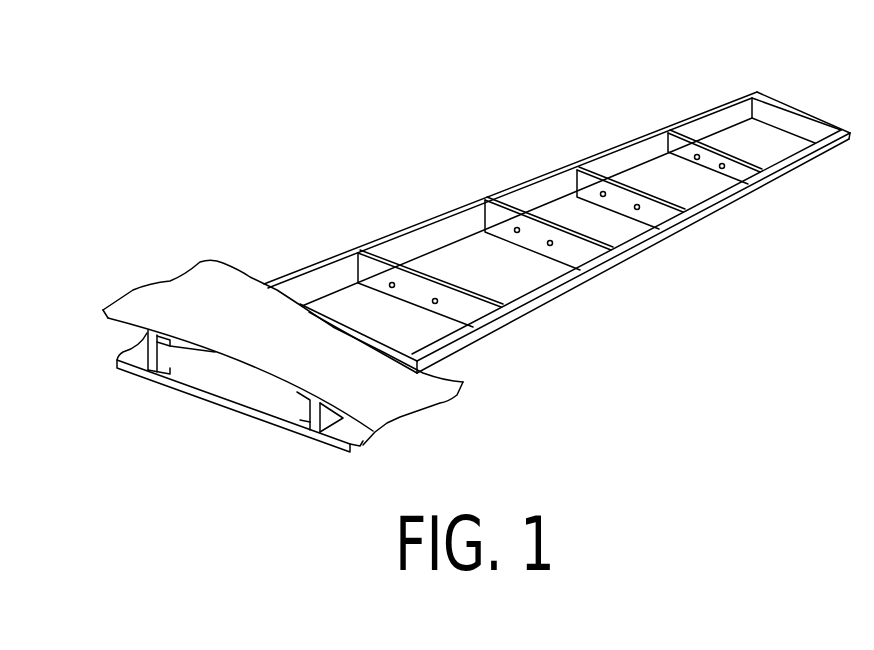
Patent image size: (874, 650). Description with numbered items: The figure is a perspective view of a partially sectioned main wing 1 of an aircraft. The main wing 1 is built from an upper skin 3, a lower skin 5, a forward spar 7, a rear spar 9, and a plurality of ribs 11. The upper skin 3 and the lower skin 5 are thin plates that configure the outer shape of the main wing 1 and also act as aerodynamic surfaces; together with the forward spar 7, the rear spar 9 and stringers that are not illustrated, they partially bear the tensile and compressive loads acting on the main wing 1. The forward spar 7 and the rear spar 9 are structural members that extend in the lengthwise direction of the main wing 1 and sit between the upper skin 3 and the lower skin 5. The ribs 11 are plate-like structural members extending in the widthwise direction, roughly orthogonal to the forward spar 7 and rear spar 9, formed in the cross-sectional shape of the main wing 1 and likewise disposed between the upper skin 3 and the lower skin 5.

The main wing 1 is at (285, 75).
The upper skin 3 is at (175, 293).
The lower skin 5 is at (235, 408).
The forward spar 7 is at (405, 229).
The rear spar 9 is at (567, 283).
The ribs 11 is at (633, 188).